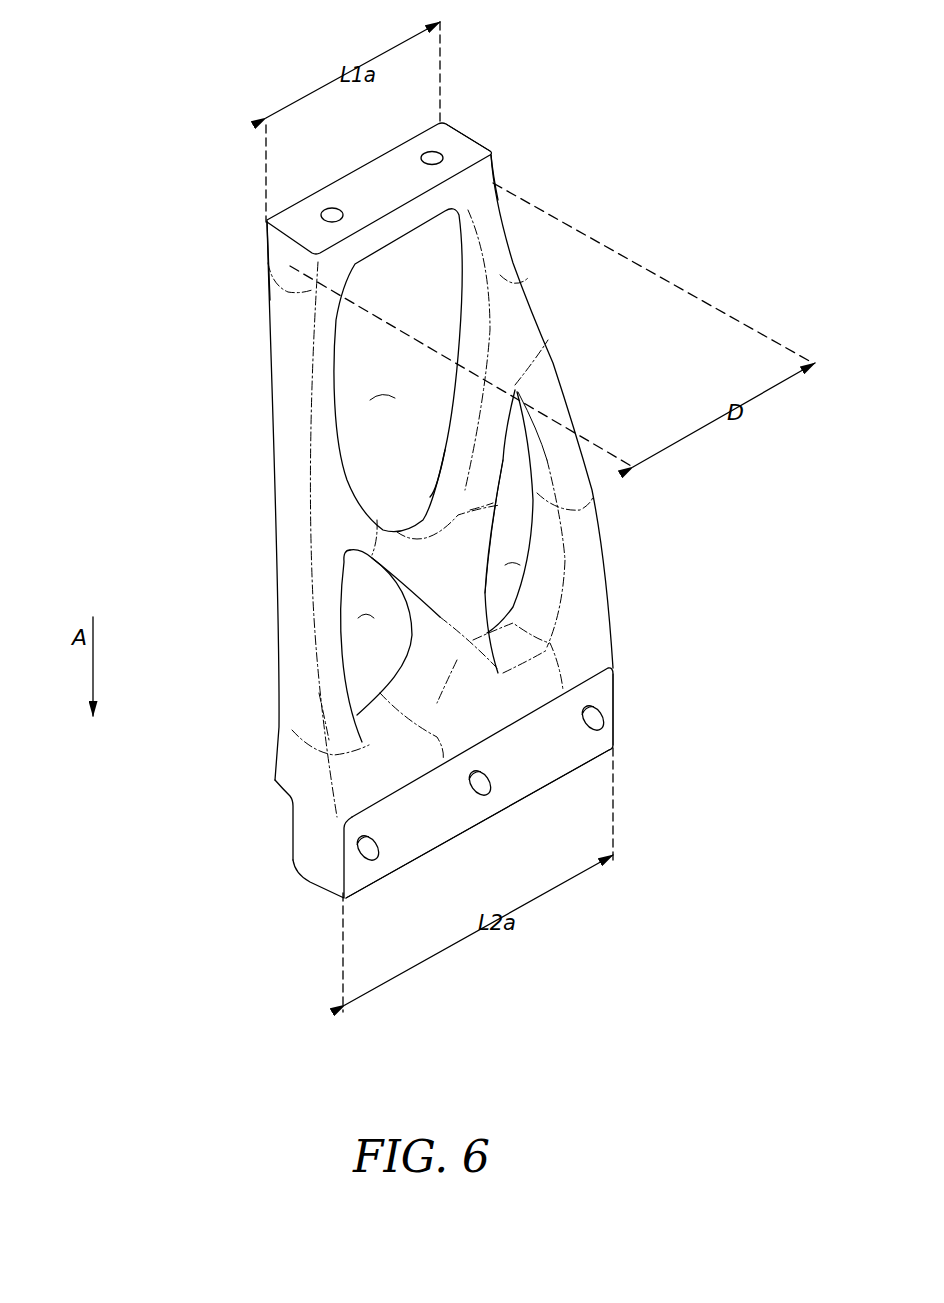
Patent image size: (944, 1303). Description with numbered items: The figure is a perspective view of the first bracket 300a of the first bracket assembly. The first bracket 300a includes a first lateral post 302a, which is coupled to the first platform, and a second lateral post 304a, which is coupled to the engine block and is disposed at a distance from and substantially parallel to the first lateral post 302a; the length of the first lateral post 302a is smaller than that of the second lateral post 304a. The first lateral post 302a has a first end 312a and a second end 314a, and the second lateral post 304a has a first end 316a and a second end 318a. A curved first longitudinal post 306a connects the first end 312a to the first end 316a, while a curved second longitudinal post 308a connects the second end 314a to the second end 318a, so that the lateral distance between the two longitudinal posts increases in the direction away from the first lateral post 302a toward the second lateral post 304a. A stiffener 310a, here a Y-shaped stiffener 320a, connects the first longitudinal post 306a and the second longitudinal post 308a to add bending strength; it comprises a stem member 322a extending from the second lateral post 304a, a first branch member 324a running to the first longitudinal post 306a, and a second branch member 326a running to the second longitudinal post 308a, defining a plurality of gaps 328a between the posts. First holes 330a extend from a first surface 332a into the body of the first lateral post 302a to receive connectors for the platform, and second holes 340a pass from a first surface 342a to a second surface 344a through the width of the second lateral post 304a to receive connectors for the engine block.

The first bracket 300a is at (188, 110).
The first lateral post 302a is at (287, 207).
The second lateral post 304a is at (540, 750).
The first longitudinal post 306a is at (273, 373).
The second longitudinal post 308a is at (530, 300).
The stiffener 310a is at (428, 497).
The first end 312a is at (283, 252).
The second end 314a is at (493, 166).
The first end 316a is at (320, 845).
The second end 318a is at (615, 685).
The Y-shaped stiffener 320a is at (453, 386).
The stem member 322a is at (427, 653).
The first branch member 324a is at (380, 570).
The second branch member 326a is at (500, 465).
The gaps 328a is at (382, 399).
The first holes 330a is at (335, 209).
The first surface 332a is at (463, 150).
The second holes 340a is at (363, 860).
The first surface 342a is at (427, 813).
The second surface 344a is at (293, 827).